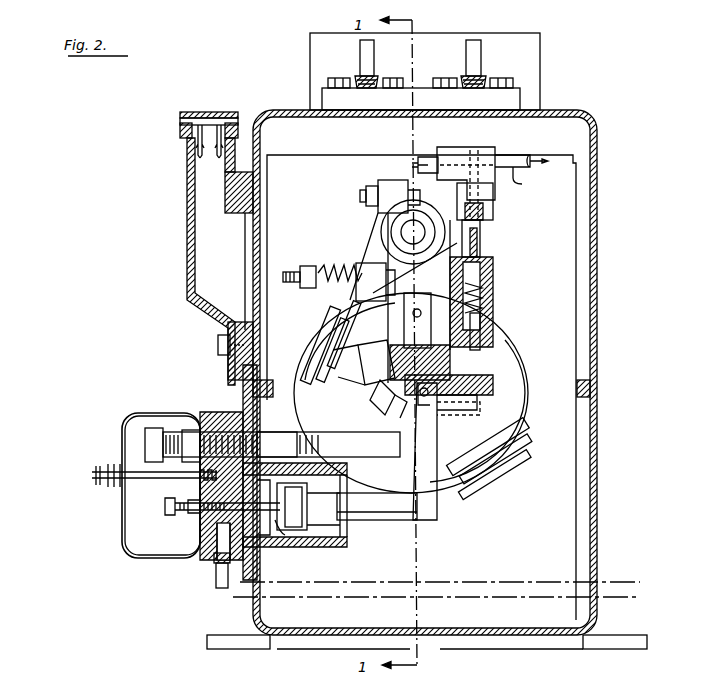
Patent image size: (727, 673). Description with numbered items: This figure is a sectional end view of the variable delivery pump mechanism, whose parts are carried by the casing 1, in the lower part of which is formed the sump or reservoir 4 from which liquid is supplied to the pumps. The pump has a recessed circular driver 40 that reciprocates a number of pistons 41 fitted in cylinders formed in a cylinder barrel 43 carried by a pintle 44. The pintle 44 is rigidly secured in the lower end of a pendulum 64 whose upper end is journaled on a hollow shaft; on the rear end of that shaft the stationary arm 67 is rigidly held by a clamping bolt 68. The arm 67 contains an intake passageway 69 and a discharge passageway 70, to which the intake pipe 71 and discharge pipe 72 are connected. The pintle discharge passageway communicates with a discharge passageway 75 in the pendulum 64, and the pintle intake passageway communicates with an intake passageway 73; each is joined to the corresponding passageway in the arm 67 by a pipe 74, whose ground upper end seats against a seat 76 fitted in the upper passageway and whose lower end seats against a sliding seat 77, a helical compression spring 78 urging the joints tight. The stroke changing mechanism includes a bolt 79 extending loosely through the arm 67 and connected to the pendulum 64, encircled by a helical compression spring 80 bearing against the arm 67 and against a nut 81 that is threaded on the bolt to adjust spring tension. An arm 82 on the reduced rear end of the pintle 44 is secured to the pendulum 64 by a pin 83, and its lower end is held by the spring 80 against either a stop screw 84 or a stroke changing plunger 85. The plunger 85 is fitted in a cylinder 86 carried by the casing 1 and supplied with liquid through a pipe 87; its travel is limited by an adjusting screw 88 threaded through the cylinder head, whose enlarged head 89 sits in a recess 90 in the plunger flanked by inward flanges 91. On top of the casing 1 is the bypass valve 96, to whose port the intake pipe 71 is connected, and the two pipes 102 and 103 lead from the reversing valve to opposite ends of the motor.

The casing 1 is at (597, 490).
The sump or reservoir 4 is at (436, 600).
The recessed circular driver 40 is at (522, 418).
The piston 41 is at (362, 350).
The cylinder barrel 43 is at (378, 397).
The pintle 44 is at (392, 406).
The pendulum 64 is at (495, 300).
The arm 67 is at (397, 190).
The clamping bolt 68 is at (358, 190).
The intake passageway 69 is at (460, 135).
The discharge passageway 70 is at (488, 150).
The intake pipe 71 is at (420, 160).
The discharge pipe 72 is at (523, 173).
The intake passageway 73 is at (426, 400).
The pipe 74 is at (483, 243).
The discharge passageway 75 is at (452, 345).
The seat 76 is at (495, 203).
The seat 77 is at (485, 285).
The helical compression spring 78 is at (485, 300).
The bolt 79 is at (285, 269).
The helical compression spring 80 is at (332, 275).
The nut 81 is at (306, 266).
The arm 82 is at (437, 510).
The pin 83 is at (417, 309).
The stop screw 84 is at (170, 434).
The stroke changing plunger 85 is at (368, 518).
The cylinder 86 is at (343, 547).
The pipe 87 is at (214, 583).
The adjusting screw 88 is at (178, 515).
The enlarged head 89 is at (266, 526).
The recess 90 is at (307, 507).
The inward flange 91 is at (285, 537).
The bypass valve 96 is at (540, 58).
The pipe 102 is at (468, 52).
The pipe 103 is at (362, 52).